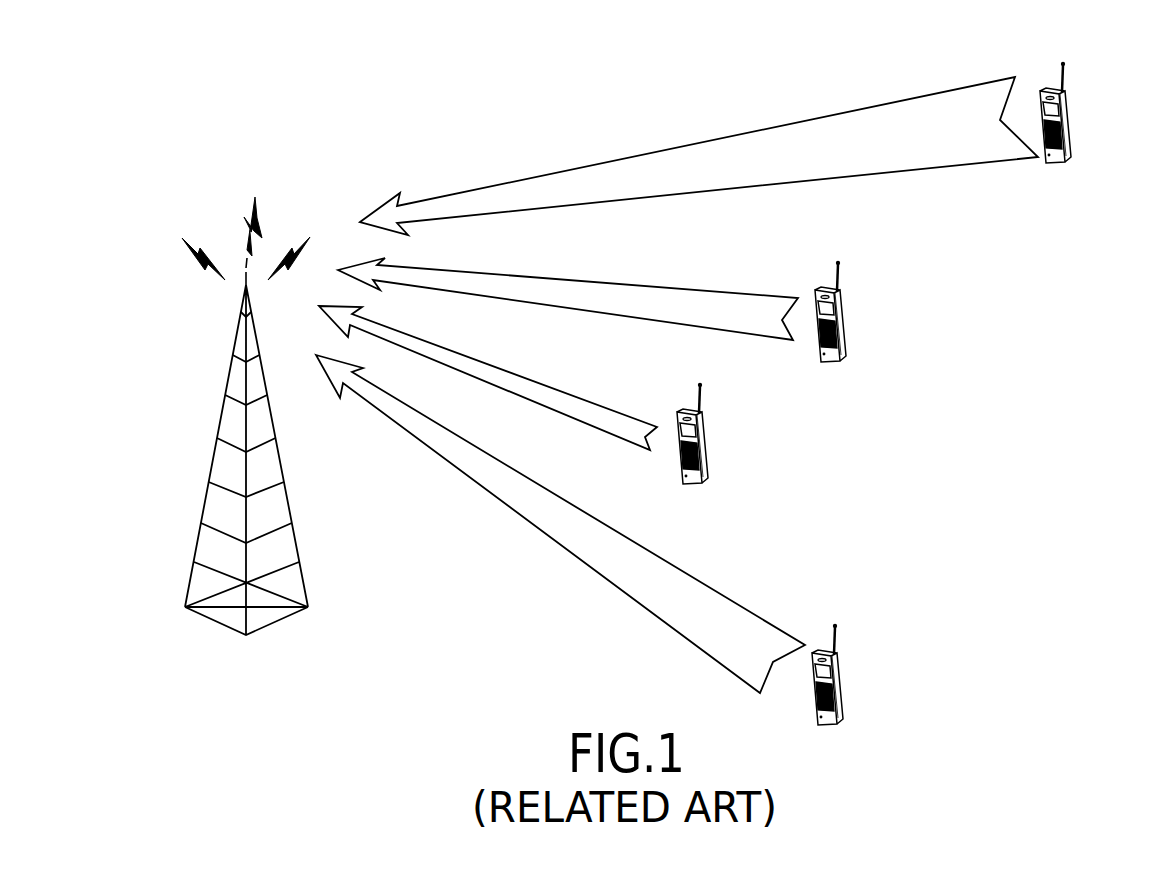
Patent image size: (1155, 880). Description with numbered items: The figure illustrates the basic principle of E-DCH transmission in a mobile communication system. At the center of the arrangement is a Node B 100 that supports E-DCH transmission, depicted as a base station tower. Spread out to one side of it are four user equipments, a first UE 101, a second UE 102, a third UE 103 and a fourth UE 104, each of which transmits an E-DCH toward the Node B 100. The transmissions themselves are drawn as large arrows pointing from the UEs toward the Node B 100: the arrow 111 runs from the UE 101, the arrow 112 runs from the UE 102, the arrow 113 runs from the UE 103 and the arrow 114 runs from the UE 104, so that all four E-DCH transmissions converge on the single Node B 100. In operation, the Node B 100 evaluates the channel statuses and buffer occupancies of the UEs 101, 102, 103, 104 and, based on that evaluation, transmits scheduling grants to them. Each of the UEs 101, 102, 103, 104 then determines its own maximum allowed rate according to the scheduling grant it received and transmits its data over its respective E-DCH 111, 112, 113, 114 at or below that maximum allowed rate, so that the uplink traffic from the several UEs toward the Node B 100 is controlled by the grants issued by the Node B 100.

The Node B 100 is at (281, 460).
The UE 101 is at (708, 453).
The UE 102 is at (847, 331).
The UE 103 is at (845, 692).
The UE 104 is at (1072, 130).
The uplink transmission from UE 101 111 is at (532, 377).
The uplink transmission from UE 102 112 is at (590, 282).
The uplink transmission from UE 103 113 is at (577, 508).
The uplink transmission from UE 104 114 is at (708, 138).